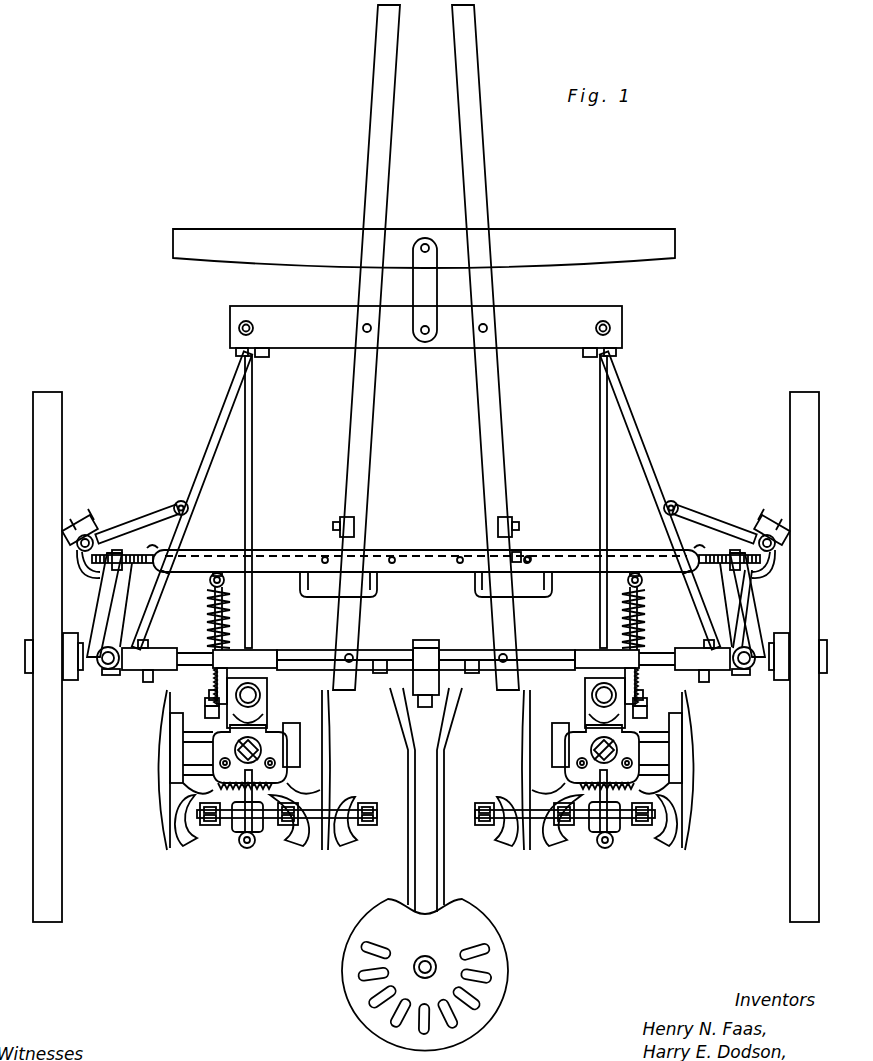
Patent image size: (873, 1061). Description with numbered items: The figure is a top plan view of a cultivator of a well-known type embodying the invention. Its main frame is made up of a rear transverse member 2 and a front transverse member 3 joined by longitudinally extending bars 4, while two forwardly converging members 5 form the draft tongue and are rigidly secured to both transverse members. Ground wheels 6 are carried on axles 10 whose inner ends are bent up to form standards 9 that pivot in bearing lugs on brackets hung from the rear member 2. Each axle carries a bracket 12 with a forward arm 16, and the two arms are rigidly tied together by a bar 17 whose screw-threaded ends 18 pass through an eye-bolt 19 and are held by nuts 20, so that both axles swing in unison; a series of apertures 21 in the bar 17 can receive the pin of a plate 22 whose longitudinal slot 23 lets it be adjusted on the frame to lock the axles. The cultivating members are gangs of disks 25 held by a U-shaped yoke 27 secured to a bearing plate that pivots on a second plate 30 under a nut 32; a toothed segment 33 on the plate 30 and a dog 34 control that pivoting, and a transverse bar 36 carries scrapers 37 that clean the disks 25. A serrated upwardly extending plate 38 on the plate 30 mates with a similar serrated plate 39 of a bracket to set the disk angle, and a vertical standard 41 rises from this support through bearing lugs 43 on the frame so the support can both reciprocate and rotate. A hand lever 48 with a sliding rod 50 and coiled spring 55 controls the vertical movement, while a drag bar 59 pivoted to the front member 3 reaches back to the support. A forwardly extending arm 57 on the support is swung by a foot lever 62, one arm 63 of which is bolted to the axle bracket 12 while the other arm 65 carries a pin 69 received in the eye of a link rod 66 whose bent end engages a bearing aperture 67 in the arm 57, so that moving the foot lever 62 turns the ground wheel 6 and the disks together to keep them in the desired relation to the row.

The rear transverse member 2 is at (525, 652).
The front transverse member 3 is at (530, 312).
The longitudinally extending bar 4 is at (228, 408).
The forwardly converging tongue member 5 is at (392, 133).
The ground wheel 6 is at (50, 392).
The upwardly extending standard 9 is at (112, 670).
The axle 10 is at (74, 680).
The bracket 12 is at (110, 676).
The arm 16 is at (97, 612).
The bar 17 is at (290, 552).
The screw-threaded end 18 is at (105, 532).
The eye-bolt 19 is at (740, 609).
The nut 20 is at (735, 518).
The aperture 21 is at (532, 556).
The plate 22 is at (518, 530).
The longitudinal slot 23 is at (522, 552).
The disk 25 is at (170, 845).
The U-shaped yoke 27 is at (168, 752).
The bearing plate 30 is at (230, 748).
The nut 32 is at (262, 742).
The toothed segment 33 is at (222, 806).
The dog 34 is at (285, 804).
The transverse bar 36 is at (335, 808).
The scraper 37 is at (172, 818).
The upwardly extending plate 38 is at (222, 720).
The serrated plate 39 is at (423, 702).
The vertical standard 41 is at (268, 700).
The bearing lug 43 is at (240, 676).
The hand lever 48 is at (252, 652).
The rod 50 is at (220, 572).
The spring 55 is at (207, 624).
The forwardly extending arm 57 is at (232, 618).
The drag bar 59 is at (255, 418).
The foot lever 62 is at (185, 575).
The arm 63 is at (125, 600).
The arm 65 is at (102, 580).
The rod 66 is at (135, 527).
The bearing aperture 67 is at (181, 501).
The pin 69 is at (84, 555).